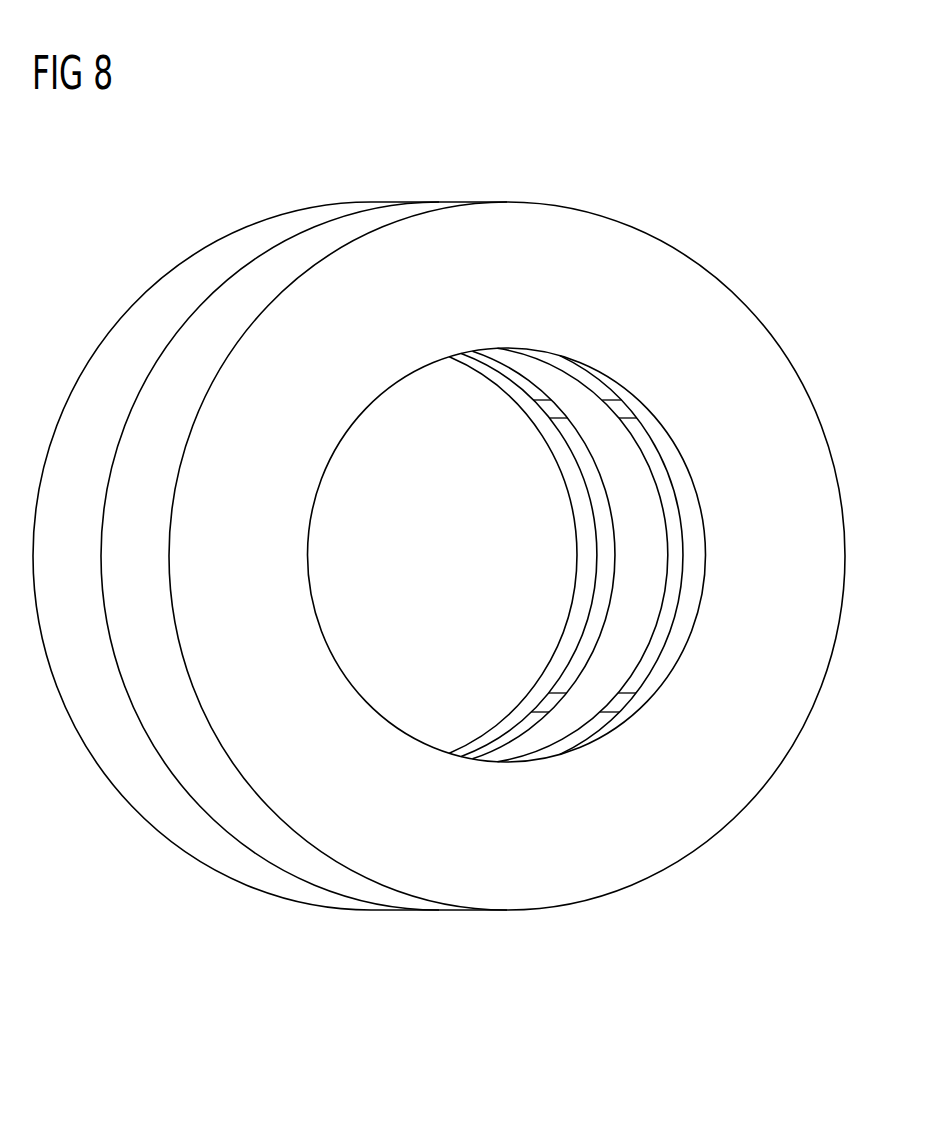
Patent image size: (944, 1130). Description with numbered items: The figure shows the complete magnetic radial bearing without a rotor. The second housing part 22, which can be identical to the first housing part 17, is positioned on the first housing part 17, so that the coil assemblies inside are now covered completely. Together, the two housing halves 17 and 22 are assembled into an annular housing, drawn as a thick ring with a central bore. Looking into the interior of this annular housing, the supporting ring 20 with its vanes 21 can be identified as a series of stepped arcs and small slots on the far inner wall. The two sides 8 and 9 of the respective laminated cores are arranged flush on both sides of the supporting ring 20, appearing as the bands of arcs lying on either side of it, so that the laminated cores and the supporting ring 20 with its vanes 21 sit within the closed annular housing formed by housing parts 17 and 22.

The side of laminated core 8 is at (605, 548).
The side of laminated core 9 is at (677, 557).
The first housing part 17 is at (184, 838).
The supporting ring 20 is at (615, 504).
The vanes 21 is at (542, 410).
The second housing part 22 is at (742, 318).